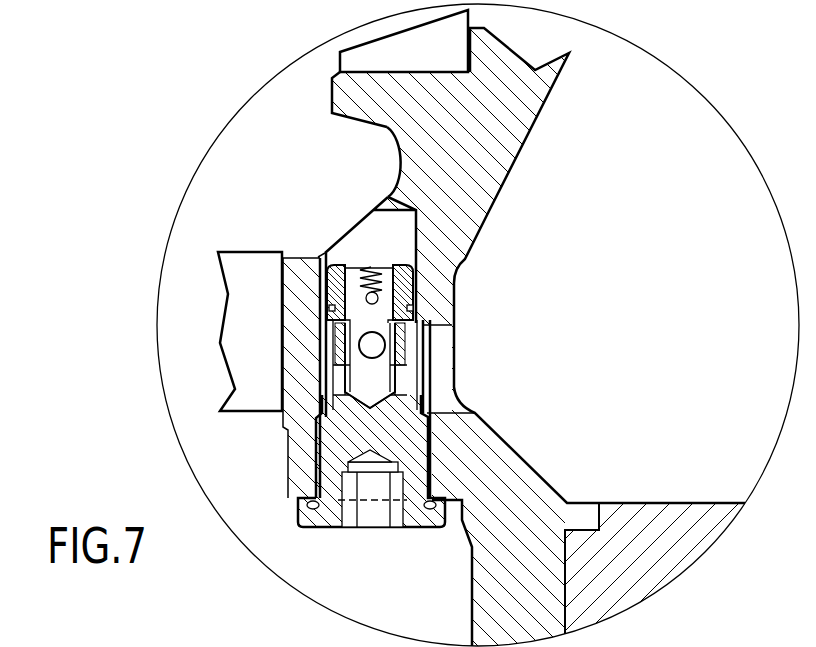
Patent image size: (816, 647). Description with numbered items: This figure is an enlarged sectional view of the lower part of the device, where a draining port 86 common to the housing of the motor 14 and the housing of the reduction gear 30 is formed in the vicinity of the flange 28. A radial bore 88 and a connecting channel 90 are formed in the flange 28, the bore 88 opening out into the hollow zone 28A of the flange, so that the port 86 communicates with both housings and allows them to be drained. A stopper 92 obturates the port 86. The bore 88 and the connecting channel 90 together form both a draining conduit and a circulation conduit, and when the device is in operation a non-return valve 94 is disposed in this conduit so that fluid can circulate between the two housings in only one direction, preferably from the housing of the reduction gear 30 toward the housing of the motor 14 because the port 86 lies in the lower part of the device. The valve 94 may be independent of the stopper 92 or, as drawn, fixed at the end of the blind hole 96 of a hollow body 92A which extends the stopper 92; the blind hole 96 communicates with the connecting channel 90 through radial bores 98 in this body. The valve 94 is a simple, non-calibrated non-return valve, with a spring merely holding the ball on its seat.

The housing of the motor 14 is at (255, 270).
The flange 28 is at (459, 215).
The hollow zone 28A is at (388, 133).
The housing of the reduction gear 30 is at (682, 517).
The draining port 86 is at (370, 503).
The bore 88 is at (317, 369).
The connecting channel 90 is at (436, 329).
The stopper 92 is at (410, 523).
The hollow body 92A is at (455, 278).
The non-return valve 94 is at (362, 262).
The blind hole 96 is at (370, 373).
The radial bores 98 is at (390, 385).